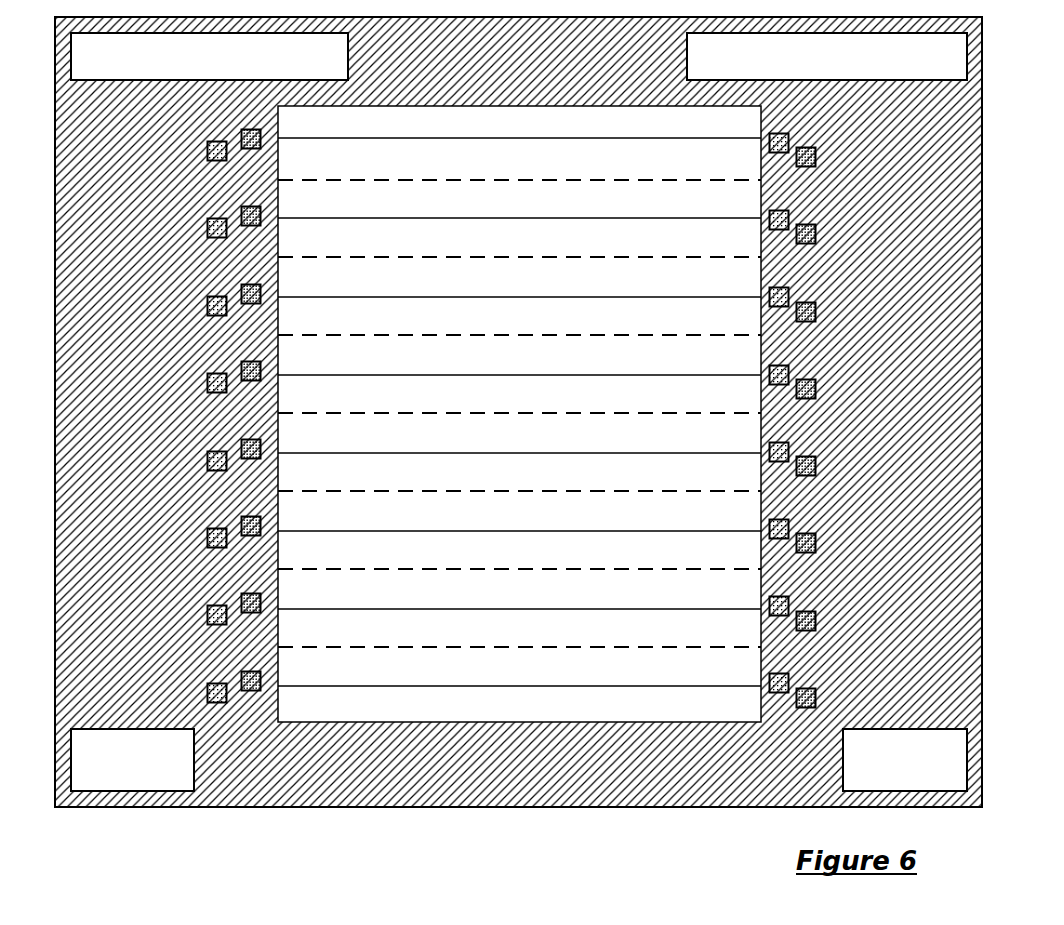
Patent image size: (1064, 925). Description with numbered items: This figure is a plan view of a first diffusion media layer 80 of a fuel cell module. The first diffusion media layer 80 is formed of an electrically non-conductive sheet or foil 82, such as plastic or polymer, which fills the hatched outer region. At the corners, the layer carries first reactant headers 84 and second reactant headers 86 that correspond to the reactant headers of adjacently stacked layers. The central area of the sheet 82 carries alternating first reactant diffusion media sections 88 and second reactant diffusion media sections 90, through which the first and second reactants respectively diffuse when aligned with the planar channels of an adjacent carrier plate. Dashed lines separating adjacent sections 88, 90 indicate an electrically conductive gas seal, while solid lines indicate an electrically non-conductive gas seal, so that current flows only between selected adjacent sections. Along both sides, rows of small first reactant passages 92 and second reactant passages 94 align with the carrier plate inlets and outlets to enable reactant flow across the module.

The first diffusion media layer 80 is at (550, 412).
The electrically non-conductive sheet or foil 82 is at (967, 188).
The first reactant headers 84 is at (124, 769).
The second reactant headers 86 is at (103, 65).
The first reactant diffusion media sections 88 is at (509, 131).
The second reactant diffusion media sections 90 is at (509, 169).
The first reactant passages 92 is at (262, 211).
The second reactant passages 94 is at (207, 220).